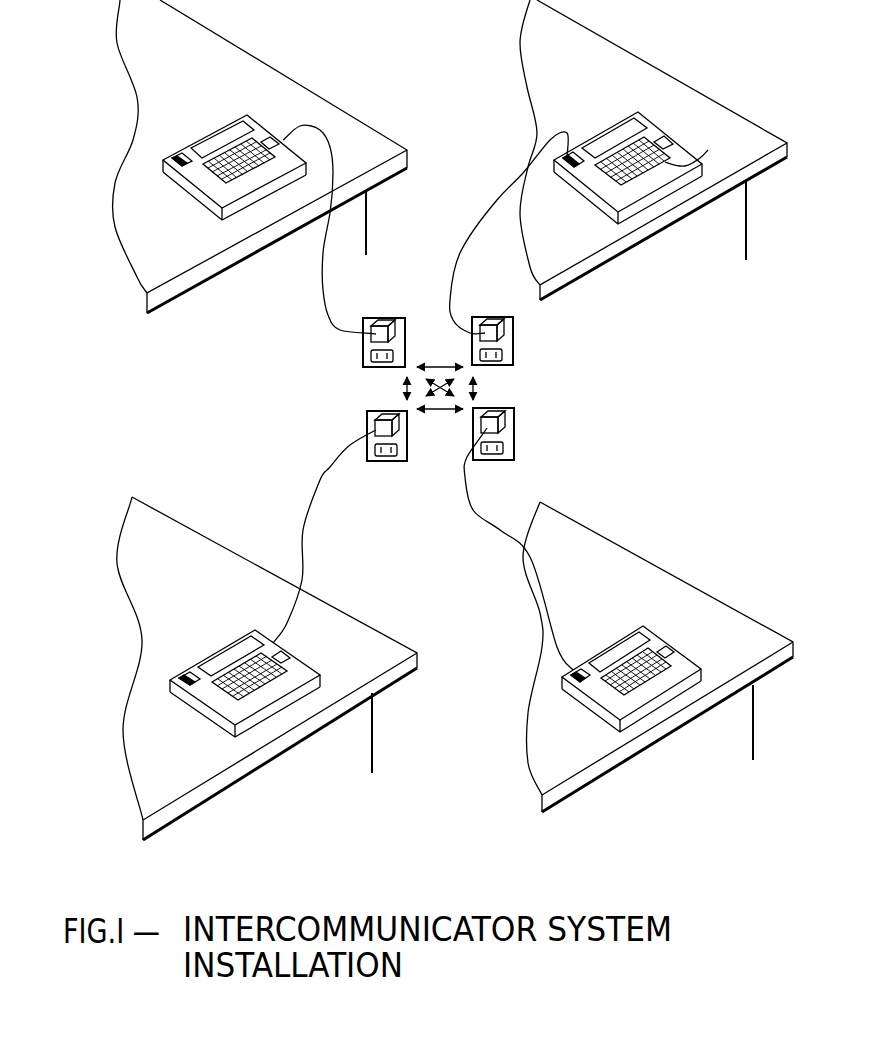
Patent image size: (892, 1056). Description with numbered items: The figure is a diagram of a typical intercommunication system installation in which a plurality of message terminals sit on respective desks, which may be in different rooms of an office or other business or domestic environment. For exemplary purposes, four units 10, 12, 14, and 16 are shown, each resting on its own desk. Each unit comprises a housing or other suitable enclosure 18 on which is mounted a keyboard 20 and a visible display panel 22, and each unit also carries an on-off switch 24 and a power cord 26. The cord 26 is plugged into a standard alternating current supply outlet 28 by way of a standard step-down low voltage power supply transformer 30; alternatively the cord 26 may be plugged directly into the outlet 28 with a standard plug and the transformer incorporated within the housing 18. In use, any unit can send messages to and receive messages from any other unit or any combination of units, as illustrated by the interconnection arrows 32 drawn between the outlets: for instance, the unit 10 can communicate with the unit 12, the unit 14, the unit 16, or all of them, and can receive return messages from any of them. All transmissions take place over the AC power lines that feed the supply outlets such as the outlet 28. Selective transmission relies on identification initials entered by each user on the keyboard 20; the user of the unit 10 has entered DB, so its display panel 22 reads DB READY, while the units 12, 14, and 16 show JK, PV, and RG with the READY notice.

The intercommunication unit 10 is at (639, 152).
The intercommunication unit 12 is at (317, 135).
The intercommunication unit 14 is at (308, 672).
The intercommunication unit 16 is at (678, 652).
The housing 18 is at (660, 128).
The keyboard 20 is at (703, 151).
The visible display panel 22 is at (637, 118).
The on-off switch 24 is at (567, 153).
The power cord 26 is at (503, 194).
The alternating current supply outlet 28 is at (513, 345).
The step-down low voltage power supply transformer 30 is at (498, 333).
The interconnection arrows 32 is at (438, 425).